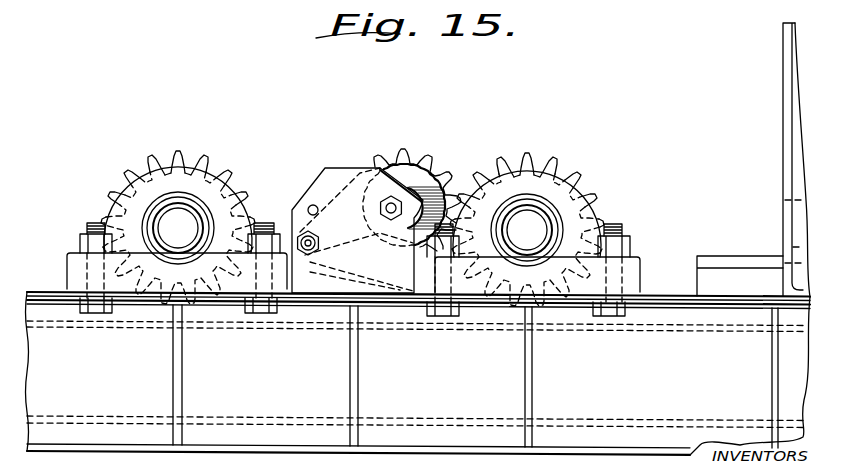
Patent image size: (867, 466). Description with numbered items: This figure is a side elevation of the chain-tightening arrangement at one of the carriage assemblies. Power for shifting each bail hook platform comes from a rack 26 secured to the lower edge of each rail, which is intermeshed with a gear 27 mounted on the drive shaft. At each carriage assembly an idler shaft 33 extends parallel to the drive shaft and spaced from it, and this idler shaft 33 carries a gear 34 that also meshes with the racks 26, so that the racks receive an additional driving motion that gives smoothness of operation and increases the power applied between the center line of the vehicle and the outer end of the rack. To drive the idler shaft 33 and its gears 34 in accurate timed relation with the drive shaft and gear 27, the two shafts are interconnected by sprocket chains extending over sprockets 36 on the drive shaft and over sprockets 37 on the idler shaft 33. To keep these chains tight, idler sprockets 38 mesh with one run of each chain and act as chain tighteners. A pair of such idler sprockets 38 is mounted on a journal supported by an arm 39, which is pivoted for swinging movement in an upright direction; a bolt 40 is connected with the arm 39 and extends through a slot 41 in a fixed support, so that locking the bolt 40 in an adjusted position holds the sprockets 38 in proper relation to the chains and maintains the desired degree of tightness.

The rack 26 is at (192, 215).
The gear 27 is at (111, 206).
The idler shaft 33 is at (530, 230).
The gear 34 is at (535, 208).
The sprocket 36 is at (178, 151).
The sprocket 37 is at (528, 152).
The idler sprocket 38 is at (438, 172).
The arm 39 is at (423, 200).
The bolt 40 is at (397, 198).
The slot 41 is at (382, 170).